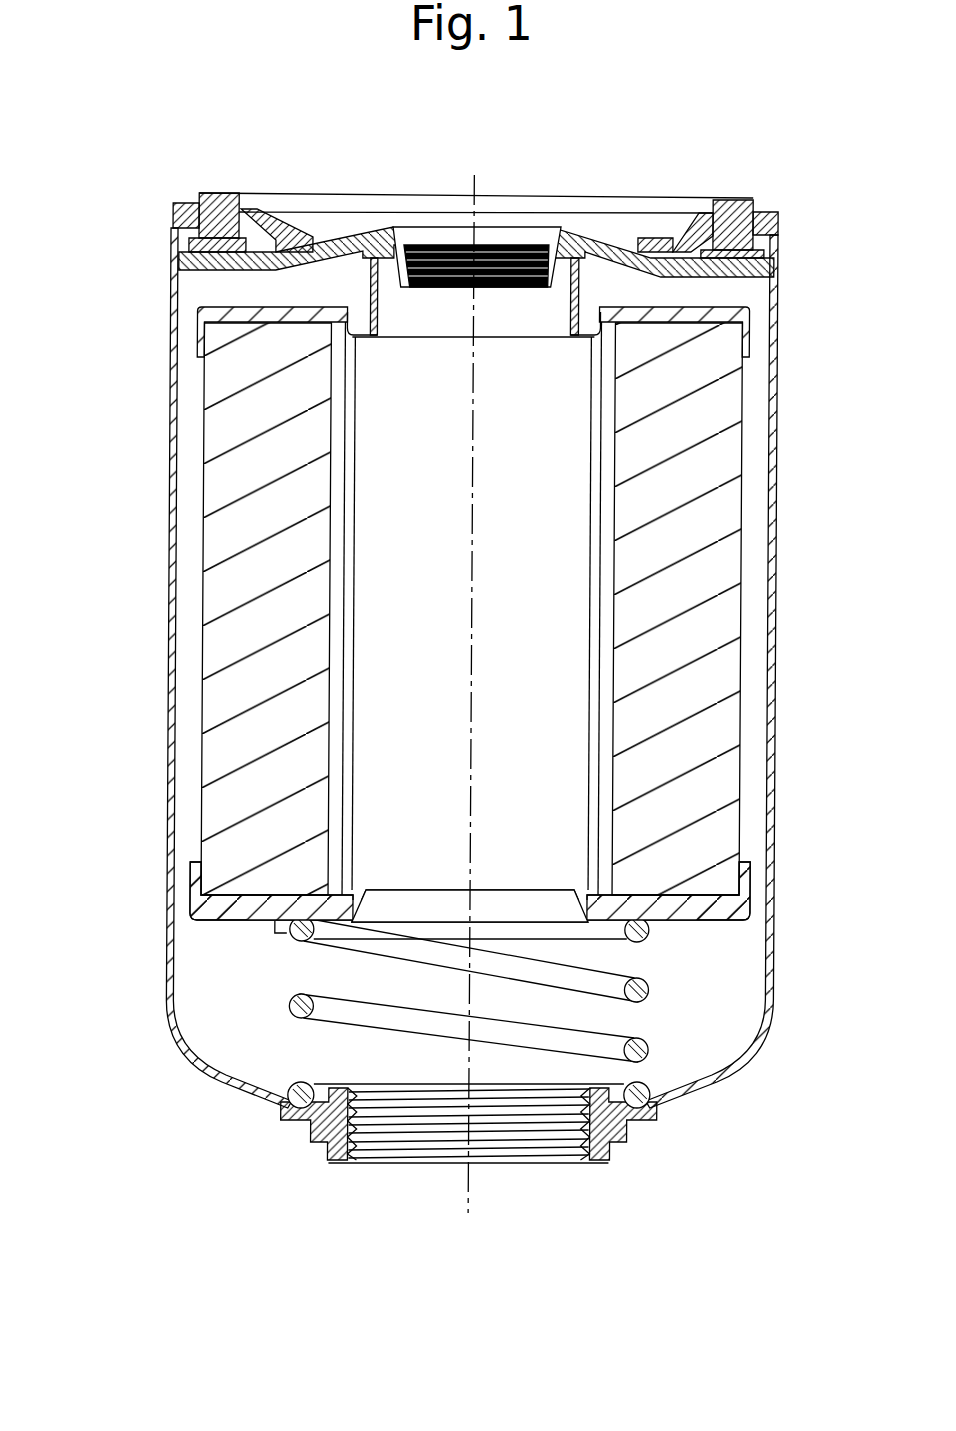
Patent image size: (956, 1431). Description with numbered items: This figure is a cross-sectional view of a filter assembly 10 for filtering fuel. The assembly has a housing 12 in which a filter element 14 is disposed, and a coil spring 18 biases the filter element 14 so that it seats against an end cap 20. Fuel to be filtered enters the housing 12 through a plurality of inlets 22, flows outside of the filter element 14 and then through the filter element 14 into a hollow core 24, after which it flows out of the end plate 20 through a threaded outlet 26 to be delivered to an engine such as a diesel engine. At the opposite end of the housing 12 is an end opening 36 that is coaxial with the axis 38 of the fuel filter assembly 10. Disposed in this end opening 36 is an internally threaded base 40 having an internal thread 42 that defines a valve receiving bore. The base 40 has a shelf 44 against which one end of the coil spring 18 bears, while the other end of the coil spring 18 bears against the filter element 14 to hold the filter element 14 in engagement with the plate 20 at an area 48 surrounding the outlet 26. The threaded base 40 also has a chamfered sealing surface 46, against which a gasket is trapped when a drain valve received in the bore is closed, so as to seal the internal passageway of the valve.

The filter assembly 10 is at (158, 557).
The housing 12 is at (778, 562).
The filter element 14 is at (729, 442).
The coil spring 18 is at (657, 988).
The end cap 20 is at (562, 235).
The inlets 22 is at (321, 240).
The hollow core 24 is at (550, 453).
The threaded outlet 26 is at (439, 243).
The end opening 36 is at (311, 1133).
The axis 38 is at (469, 565).
The internally threaded base 40 is at (595, 1178).
The internal thread 42 is at (415, 1135).
The shelf 44 is at (658, 1118).
The chamfered sealing surface 46 is at (350, 1163).
The area 48 is at (385, 230).